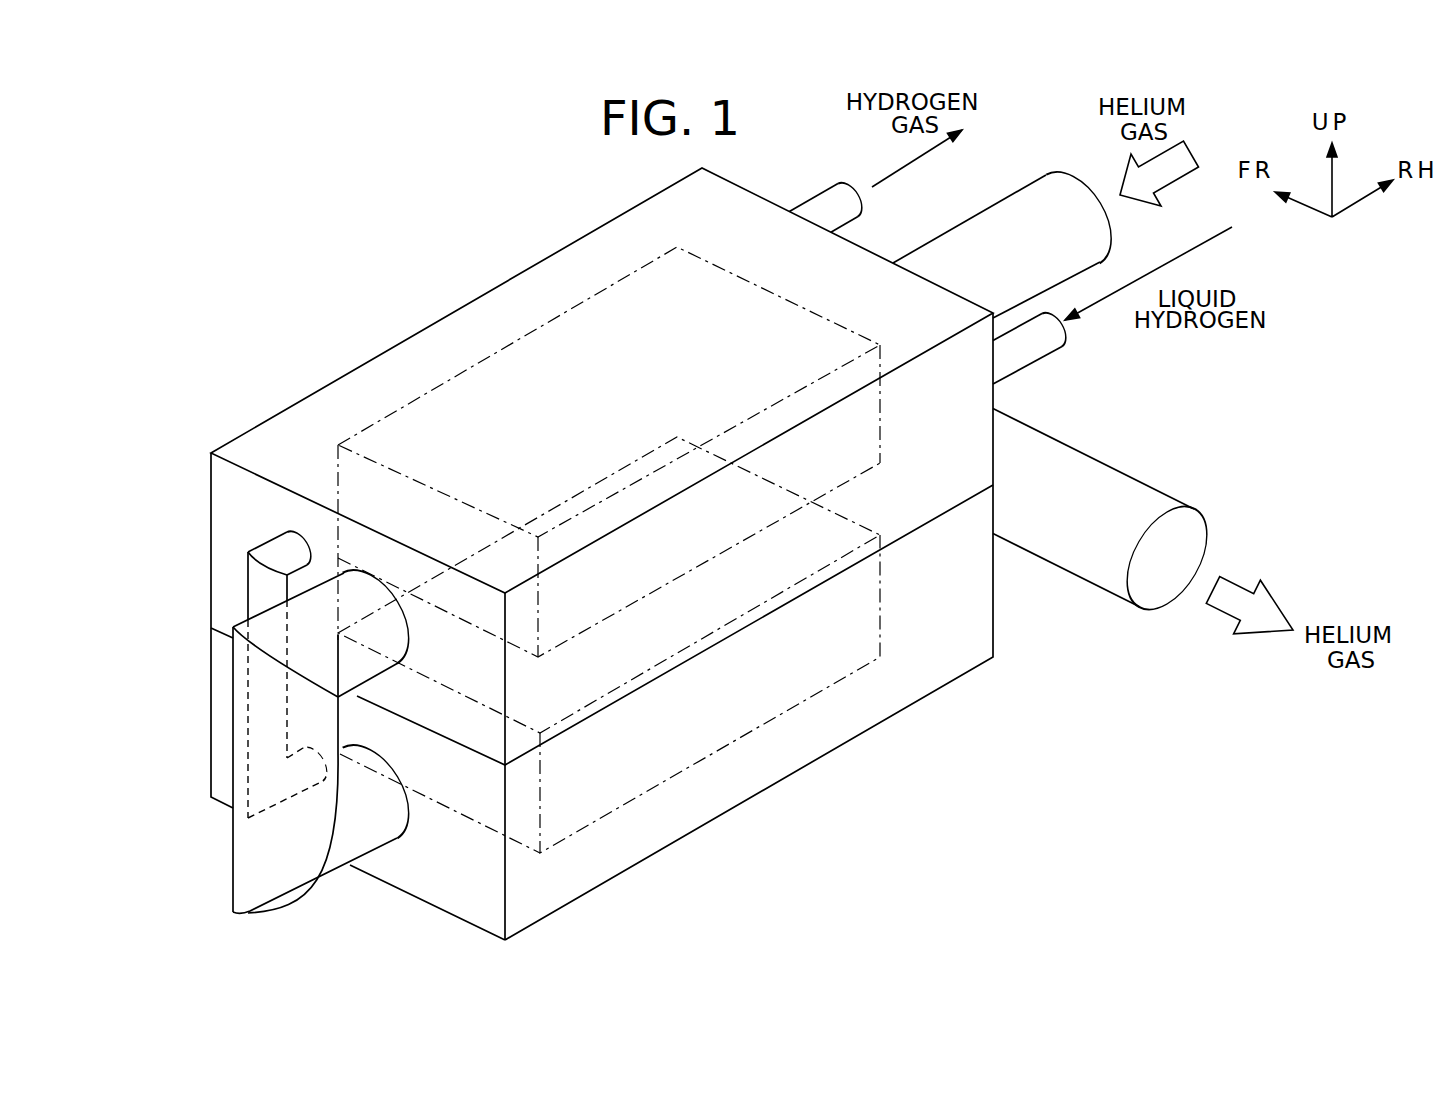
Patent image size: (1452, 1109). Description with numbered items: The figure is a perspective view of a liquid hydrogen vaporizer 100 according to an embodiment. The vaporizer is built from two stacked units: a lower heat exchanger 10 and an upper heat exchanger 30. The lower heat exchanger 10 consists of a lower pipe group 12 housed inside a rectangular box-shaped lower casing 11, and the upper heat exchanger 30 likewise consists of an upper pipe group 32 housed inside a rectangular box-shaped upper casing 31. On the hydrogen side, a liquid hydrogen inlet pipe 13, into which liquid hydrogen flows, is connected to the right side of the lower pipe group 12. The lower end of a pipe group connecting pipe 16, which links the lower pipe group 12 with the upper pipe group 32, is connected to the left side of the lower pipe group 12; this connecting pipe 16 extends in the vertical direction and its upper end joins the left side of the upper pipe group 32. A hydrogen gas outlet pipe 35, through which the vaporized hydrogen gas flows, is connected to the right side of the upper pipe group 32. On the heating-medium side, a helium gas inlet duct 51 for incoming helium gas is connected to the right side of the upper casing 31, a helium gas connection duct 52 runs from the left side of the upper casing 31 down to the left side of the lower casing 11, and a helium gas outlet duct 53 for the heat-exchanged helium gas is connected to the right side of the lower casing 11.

The liquid hydrogen vaporizer 100 is at (258, 170).
The lower heat exchanger 10 is at (803, 763).
The lower casing 11 is at (890, 715).
The lower pipe group 12 is at (683, 772).
The liquid hydrogen inlet pipe 13 is at (1045, 348).
The pipe group connecting pipe 16 is at (251, 590).
The upper heat exchanger 30 is at (462, 312).
The upper casing 31 is at (547, 260).
The upper pipe group 32 is at (397, 403).
The hydrogen gas outlet pipe 35 is at (813, 197).
The helium gas inlet duct 51 is at (1007, 192).
The helium gas connection duct 52 is at (250, 910).
The helium gas outlet duct 53 is at (1167, 498).